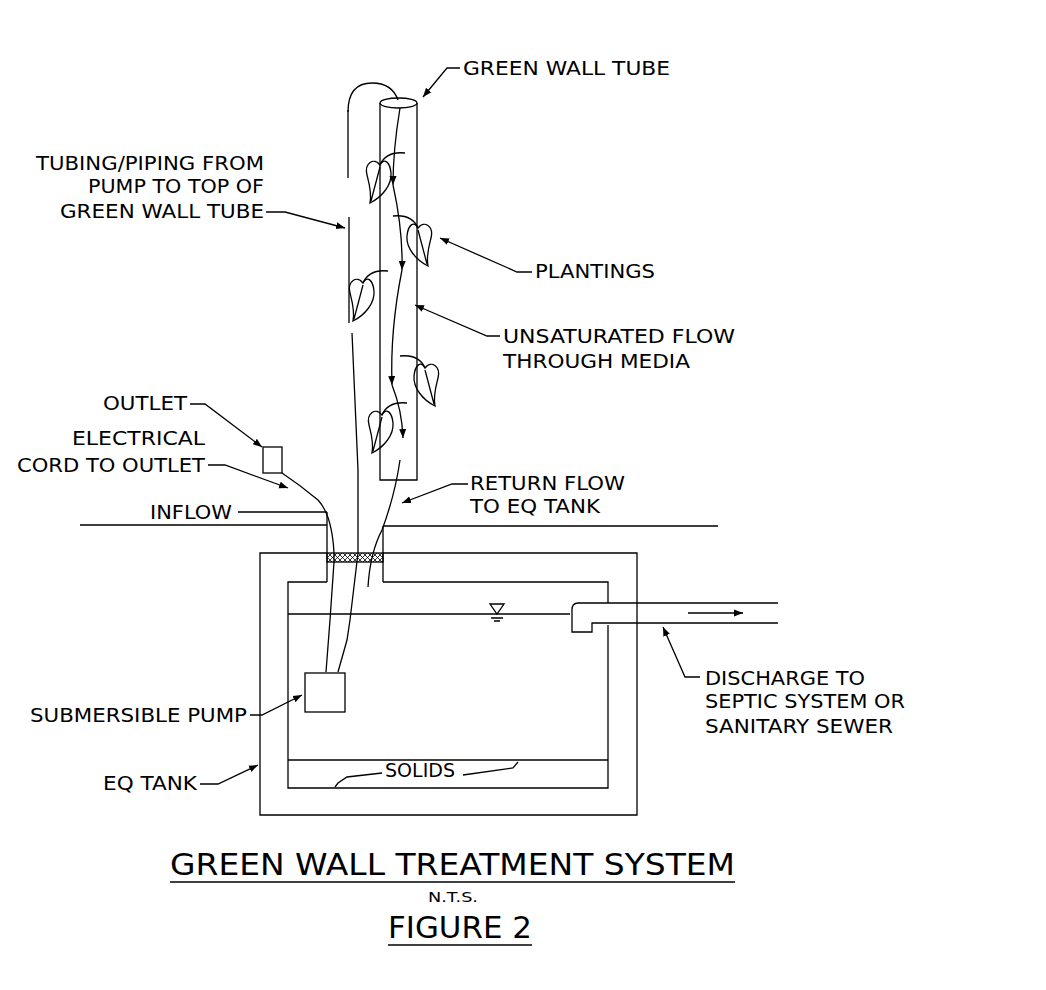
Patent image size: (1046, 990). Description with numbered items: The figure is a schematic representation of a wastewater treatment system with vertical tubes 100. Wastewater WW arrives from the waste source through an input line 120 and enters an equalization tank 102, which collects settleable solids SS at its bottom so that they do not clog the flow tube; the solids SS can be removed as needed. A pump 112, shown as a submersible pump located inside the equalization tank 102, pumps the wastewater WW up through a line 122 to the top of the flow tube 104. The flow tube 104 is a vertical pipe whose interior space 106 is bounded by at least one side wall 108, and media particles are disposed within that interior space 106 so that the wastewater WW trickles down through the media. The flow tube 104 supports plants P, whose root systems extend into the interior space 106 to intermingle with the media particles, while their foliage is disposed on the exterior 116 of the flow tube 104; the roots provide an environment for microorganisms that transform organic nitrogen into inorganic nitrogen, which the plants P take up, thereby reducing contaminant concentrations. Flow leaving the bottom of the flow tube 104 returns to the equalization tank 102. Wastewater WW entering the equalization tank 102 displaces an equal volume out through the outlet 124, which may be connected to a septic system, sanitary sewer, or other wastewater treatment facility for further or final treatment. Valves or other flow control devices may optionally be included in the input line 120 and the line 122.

The wastewater treatment system with vertical tubes 100 is at (275, 42).
The equalization tank 102 is at (640, 806).
The flow tube 104 is at (453, 128).
The interior space 106 is at (402, 98).
The side wall 108 is at (420, 283).
The pump 112 is at (325, 692).
The exterior 116 is at (420, 430).
The input line 120 is at (140, 523).
The line 122 is at (343, 345).
The outlet 124 is at (703, 602).
The plants P is at (437, 222).
The wastewater WW is at (557, 717).
The settleable solids SS is at (557, 795).